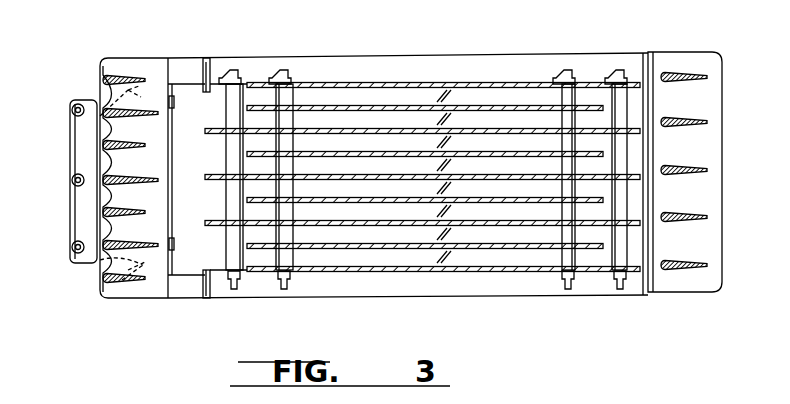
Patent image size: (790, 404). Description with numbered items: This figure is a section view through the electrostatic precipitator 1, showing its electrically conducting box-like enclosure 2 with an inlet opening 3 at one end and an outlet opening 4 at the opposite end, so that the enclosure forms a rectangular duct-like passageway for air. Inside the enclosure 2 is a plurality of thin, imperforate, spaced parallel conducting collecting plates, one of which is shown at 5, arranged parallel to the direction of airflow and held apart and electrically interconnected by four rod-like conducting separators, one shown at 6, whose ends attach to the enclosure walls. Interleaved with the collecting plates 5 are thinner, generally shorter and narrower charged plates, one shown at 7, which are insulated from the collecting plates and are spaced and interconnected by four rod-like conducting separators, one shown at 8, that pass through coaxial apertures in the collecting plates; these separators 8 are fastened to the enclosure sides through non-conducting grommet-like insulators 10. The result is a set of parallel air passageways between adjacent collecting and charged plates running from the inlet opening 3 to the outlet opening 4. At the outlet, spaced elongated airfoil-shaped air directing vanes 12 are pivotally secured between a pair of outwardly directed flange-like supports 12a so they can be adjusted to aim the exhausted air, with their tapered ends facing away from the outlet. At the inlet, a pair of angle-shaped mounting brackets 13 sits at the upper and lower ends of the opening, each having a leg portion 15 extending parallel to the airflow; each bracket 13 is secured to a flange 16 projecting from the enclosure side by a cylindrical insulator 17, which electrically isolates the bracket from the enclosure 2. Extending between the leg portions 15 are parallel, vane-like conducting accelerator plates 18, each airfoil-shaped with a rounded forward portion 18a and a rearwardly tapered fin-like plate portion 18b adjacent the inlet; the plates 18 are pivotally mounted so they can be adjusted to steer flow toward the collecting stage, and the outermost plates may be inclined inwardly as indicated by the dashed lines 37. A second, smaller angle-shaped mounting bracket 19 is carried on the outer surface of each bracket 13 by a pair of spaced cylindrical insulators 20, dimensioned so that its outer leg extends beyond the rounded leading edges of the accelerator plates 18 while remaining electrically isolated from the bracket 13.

The electrostatic precipitator 1 is at (556, 298).
The enclosure 2 is at (290, 57).
The inlet opening 3 is at (228, 158).
The outlet opening 4 is at (624, 153).
The collecting plate 5 is at (402, 130).
The conducting separator 6 is at (228, 107).
The charged plate 7 is at (352, 105).
The conducting separator 8 is at (277, 100).
The grommet-like insulator 10 is at (297, 83).
The air directing vane 12 is at (690, 120).
The flange-like support 12a is at (667, 60).
The mounting bracket 13 is at (152, 63).
The leg portion 15 is at (147, 299).
The flange 16 is at (208, 70).
The cylindrical insulator 17 is at (183, 68).
The accelerator plate 18 is at (135, 77).
The rounded forward portion 18a is at (105, 279).
The tapered fin-like plate portion 18b is at (120, 284).
The mounting bracket 19 is at (82, 100).
The cylindrical insulator 20 is at (100, 97).
The dashed lines 37 is at (72, 118).